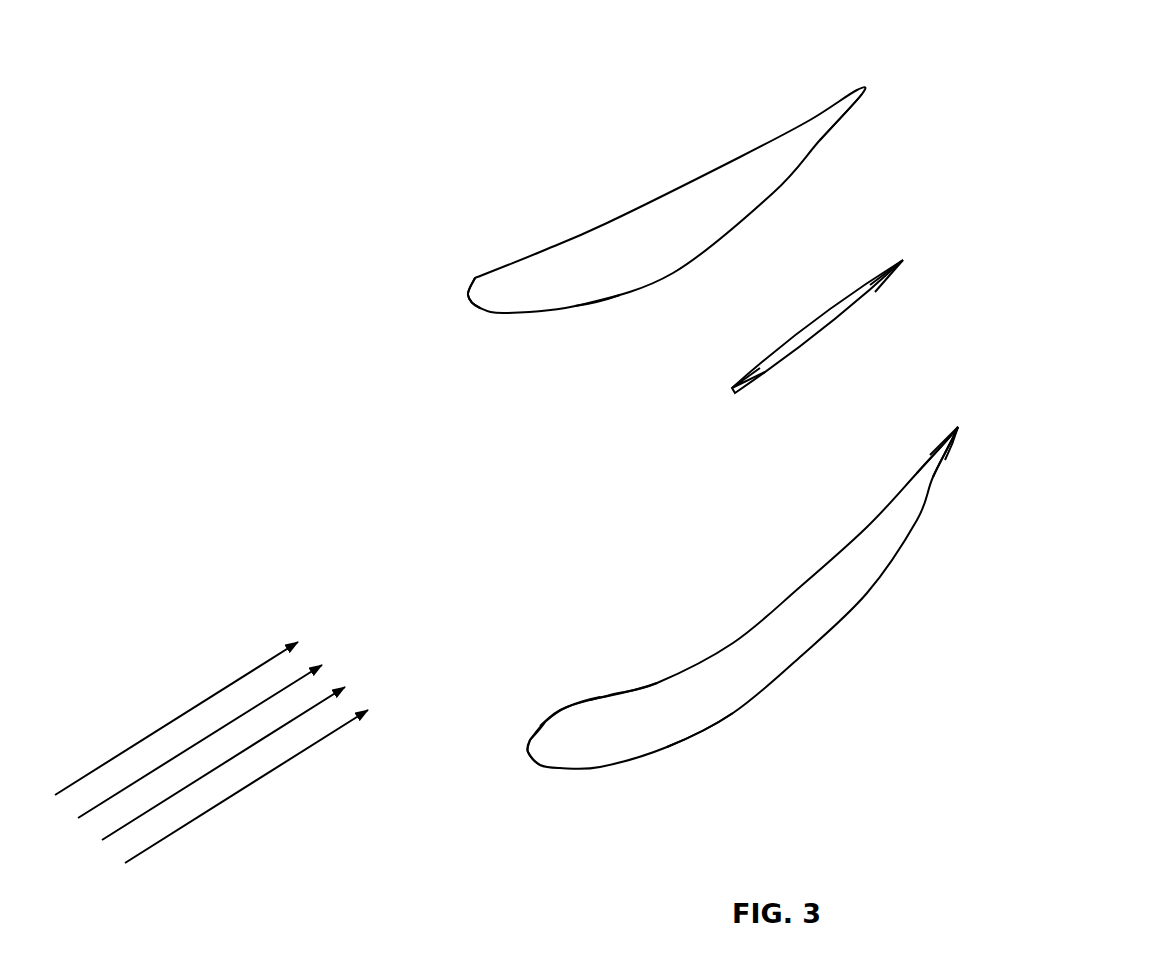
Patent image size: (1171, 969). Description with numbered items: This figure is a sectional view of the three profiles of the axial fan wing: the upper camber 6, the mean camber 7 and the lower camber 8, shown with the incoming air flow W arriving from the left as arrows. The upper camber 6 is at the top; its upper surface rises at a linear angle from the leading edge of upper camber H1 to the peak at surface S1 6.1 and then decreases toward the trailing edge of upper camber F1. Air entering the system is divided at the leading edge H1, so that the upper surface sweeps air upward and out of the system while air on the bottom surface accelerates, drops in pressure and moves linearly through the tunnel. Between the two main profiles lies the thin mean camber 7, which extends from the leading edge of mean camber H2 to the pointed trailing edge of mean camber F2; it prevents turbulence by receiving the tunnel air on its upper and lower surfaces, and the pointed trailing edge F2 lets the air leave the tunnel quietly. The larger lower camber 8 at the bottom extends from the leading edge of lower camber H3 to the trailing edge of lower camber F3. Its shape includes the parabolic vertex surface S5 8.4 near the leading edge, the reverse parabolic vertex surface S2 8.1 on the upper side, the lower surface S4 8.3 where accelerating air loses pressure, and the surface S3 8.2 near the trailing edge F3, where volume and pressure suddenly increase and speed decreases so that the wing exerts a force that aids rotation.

The upper camber 6 is at (586, 213).
The surface S1 6.1 is at (580, 306).
The mean camber 7 is at (817, 355).
The lower camber 8 is at (543, 800).
The surface S2 8.1 is at (613, 697).
The surface S3 8.2 is at (930, 478).
The surface S4 8.3 is at (700, 727).
The surface S5 8.4 is at (560, 712).
The trailing edge of upper camber F1 is at (862, 92).
The trailing edge of mean camber F2 is at (903, 260).
The trailing edge of lower camber F3 is at (960, 430).
The leading edge of upper camber H1 is at (468, 298).
The leading edge of mean camber H2 is at (732, 389).
The leading edge of lower camber H3 is at (532, 757).
The wind direction W is at (211, 752).